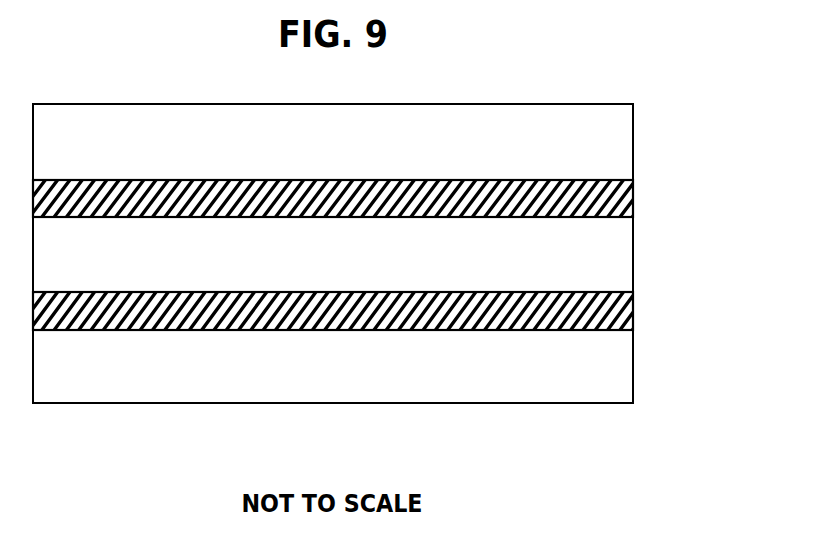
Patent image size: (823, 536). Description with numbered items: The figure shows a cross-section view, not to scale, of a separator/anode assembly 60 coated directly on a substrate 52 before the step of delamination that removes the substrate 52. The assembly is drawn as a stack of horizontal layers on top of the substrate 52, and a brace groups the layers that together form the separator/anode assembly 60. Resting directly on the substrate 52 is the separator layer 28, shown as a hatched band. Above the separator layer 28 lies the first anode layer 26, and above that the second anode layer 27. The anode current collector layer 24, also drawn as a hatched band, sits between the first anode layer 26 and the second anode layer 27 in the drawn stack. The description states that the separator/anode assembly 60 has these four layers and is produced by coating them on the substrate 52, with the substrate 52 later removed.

The second anode layer 27 is at (615, 142).
The anode current collector layer 24 is at (615, 198).
The first anode layer 26 is at (615, 254).
The separator layer 28 is at (615, 310).
The substrate 52 is at (615, 367).
The separator/anode assembly 60 is at (706, 103).